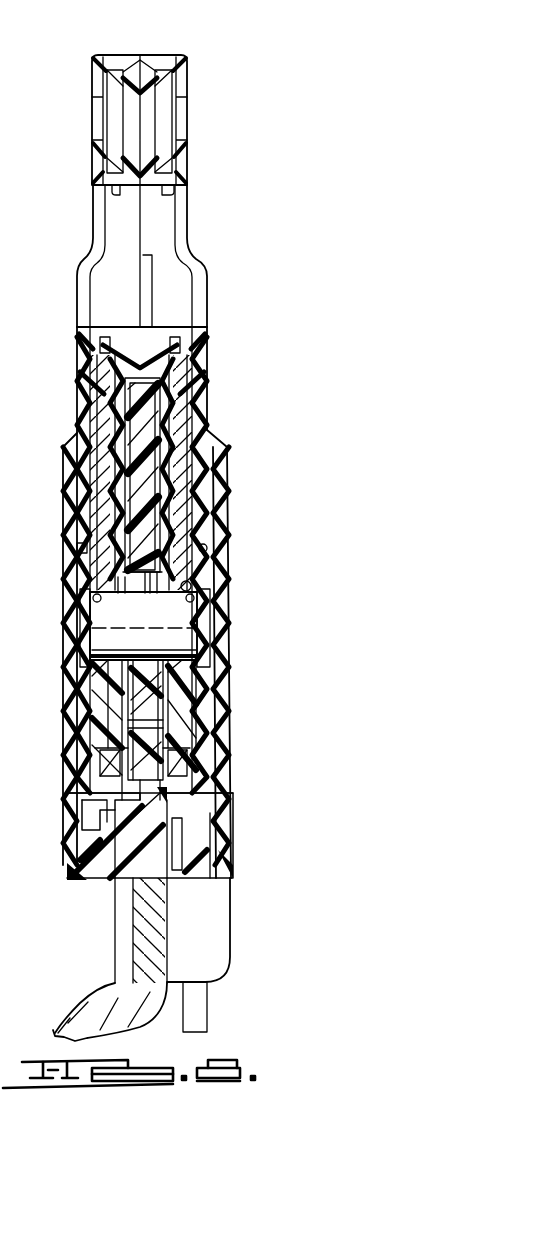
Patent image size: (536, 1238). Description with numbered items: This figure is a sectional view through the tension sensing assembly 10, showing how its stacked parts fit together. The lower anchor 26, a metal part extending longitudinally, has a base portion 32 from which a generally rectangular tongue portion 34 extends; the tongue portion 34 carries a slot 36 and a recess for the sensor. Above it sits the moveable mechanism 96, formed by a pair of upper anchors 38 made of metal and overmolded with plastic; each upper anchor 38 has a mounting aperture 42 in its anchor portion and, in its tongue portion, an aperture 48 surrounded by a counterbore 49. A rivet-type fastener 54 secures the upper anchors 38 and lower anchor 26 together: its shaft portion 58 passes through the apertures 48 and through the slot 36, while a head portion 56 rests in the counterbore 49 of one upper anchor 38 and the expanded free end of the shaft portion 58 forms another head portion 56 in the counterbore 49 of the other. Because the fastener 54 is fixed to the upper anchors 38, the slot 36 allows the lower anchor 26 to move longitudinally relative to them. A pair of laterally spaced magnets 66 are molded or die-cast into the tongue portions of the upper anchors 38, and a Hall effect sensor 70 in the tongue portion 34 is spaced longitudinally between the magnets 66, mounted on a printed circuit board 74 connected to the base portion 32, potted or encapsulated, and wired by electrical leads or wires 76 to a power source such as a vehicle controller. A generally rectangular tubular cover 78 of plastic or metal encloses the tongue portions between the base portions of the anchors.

The tension sensing assembly 10 is at (214, 55).
The upper anchor 38 is at (92, 78).
The mounting aperture 42 is at (116, 191).
The moveable mechanism 96 is at (76, 360).
The tongue portion 34 is at (150, 433).
The cover 78 is at (68, 518).
The counterbore 49 is at (80, 550).
The fastener 54 is at (190, 587).
The aperture 48 is at (88, 608).
The slot 36 is at (147, 592).
The head portion 56 is at (88, 622).
The shaft portion 58 is at (100, 643).
The magnet 66 is at (110, 768).
The Hall effect sensor 70 is at (157, 783).
The printed circuit board 74 is at (175, 848).
The base portion 32 is at (100, 860).
The lower anchor 26 is at (73, 1002).
The electrical leads or wires 76 is at (200, 1002).